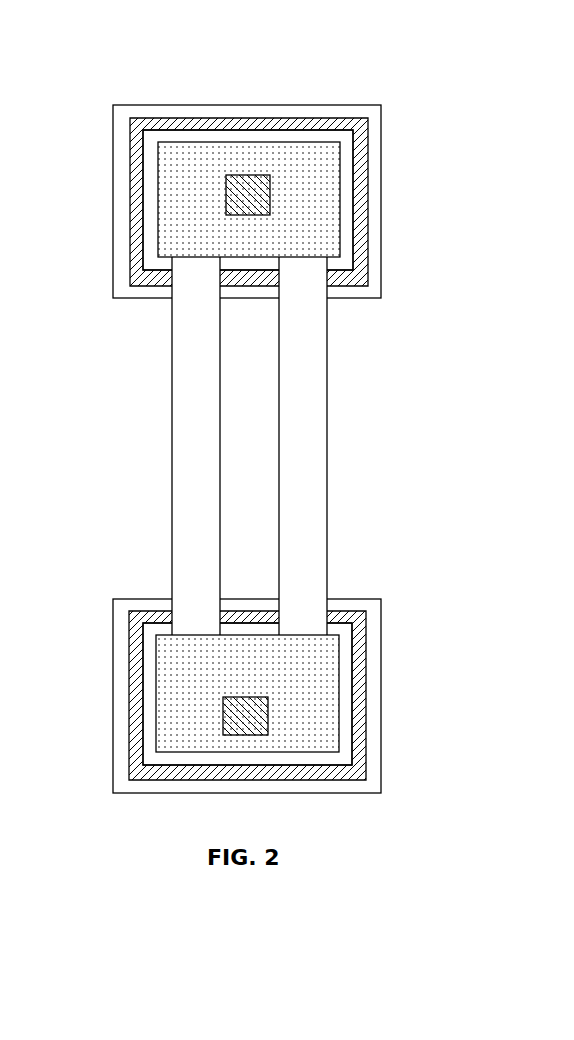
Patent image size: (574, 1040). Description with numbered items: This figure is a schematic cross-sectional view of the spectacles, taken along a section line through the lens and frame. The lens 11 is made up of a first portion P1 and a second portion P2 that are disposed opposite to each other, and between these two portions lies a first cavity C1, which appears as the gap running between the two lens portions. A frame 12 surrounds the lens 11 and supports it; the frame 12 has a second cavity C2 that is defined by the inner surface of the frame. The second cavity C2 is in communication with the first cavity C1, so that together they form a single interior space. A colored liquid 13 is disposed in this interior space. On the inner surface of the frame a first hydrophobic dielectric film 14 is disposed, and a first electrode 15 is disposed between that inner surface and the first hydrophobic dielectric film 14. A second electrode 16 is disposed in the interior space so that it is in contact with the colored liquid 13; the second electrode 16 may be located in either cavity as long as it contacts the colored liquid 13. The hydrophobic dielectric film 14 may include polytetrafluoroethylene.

The lens 11 is at (327, 339).
The frame 12 is at (377, 240).
The colored liquid 13 is at (176, 198).
The first hydrophobic dielectric film 14 is at (345, 173).
The first electrode 15 is at (358, 210).
The second electrode 16 is at (242, 195).
The first cavity C1 is at (237, 537).
The second cavity C2 is at (307, 140).
The first portion P1 is at (188, 409).
The second portion P2 is at (312, 409).